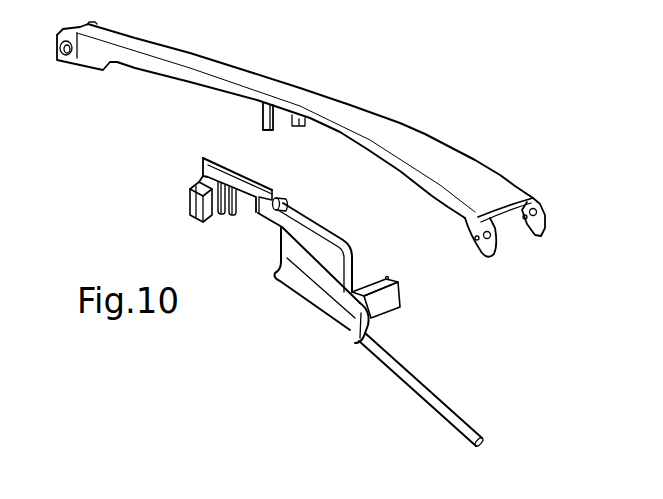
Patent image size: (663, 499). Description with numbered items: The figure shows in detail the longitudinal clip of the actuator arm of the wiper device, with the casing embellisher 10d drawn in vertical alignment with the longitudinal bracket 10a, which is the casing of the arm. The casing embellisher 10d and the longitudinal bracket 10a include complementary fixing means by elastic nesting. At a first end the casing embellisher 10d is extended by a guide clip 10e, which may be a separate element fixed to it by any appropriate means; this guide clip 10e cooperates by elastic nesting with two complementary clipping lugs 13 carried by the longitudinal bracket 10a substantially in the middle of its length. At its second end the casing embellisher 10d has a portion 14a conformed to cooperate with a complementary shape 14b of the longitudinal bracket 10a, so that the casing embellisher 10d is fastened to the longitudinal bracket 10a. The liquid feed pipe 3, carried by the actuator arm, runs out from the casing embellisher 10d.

The liquid feed pipe 3 is at (408, 372).
The longitudinal bracket 10a is at (358, 120).
The casing embellisher 10d is at (308, 286).
The guide clip 10e is at (214, 155).
The clipping lugs 13 is at (262, 112).
The portion 14a is at (350, 325).
The complementary shape 14b is at (427, 193).